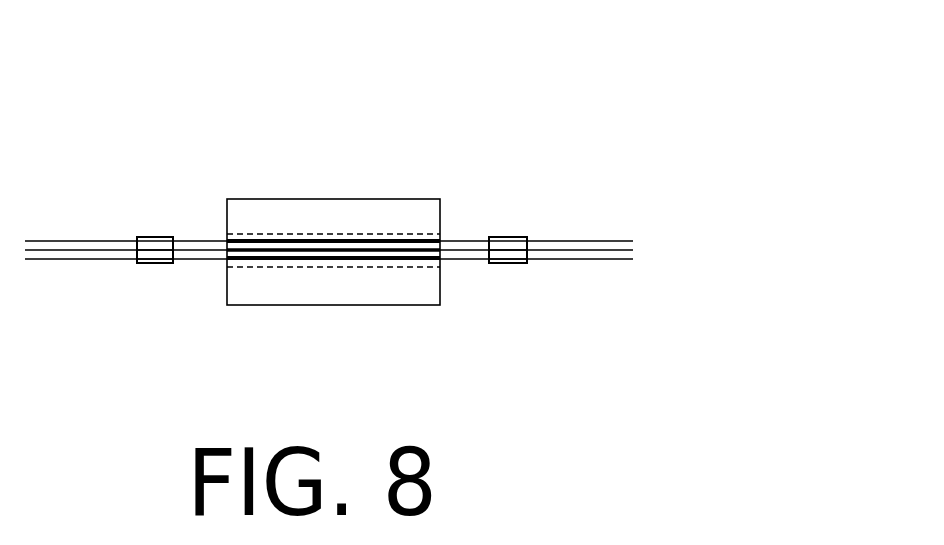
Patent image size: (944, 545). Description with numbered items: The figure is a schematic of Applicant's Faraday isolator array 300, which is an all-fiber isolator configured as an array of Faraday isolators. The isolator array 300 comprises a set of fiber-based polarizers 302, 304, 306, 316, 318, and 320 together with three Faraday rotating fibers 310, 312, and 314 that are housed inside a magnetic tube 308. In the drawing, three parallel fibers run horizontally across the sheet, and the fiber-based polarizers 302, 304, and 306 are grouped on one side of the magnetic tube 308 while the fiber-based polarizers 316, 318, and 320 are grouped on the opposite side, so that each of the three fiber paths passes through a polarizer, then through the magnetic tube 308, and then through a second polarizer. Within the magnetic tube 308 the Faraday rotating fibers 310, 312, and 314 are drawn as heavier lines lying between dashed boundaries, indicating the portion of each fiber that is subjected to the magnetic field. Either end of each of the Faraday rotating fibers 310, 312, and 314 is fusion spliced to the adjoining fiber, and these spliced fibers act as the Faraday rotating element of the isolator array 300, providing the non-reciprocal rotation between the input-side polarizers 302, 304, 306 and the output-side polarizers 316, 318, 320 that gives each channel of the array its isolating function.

The Faraday isolator array 300 is at (545, 80).
The fiber-based polarizer 302 is at (147, 237).
The fiber-based polarizer 304 is at (162, 237).
The fiber-based polarizer 306 is at (165, 263).
The magnetic tube 308 is at (286, 199).
The Faraday rotating fiber 310 is at (332, 241).
The Faraday rotating fiber 312 is at (300, 252).
The Faraday rotating fiber 314 is at (360, 260).
The fiber-based polarizer 316 is at (503, 237).
The fiber-based polarizer 318 is at (508, 253).
The fiber-based polarizer 320 is at (494, 262).